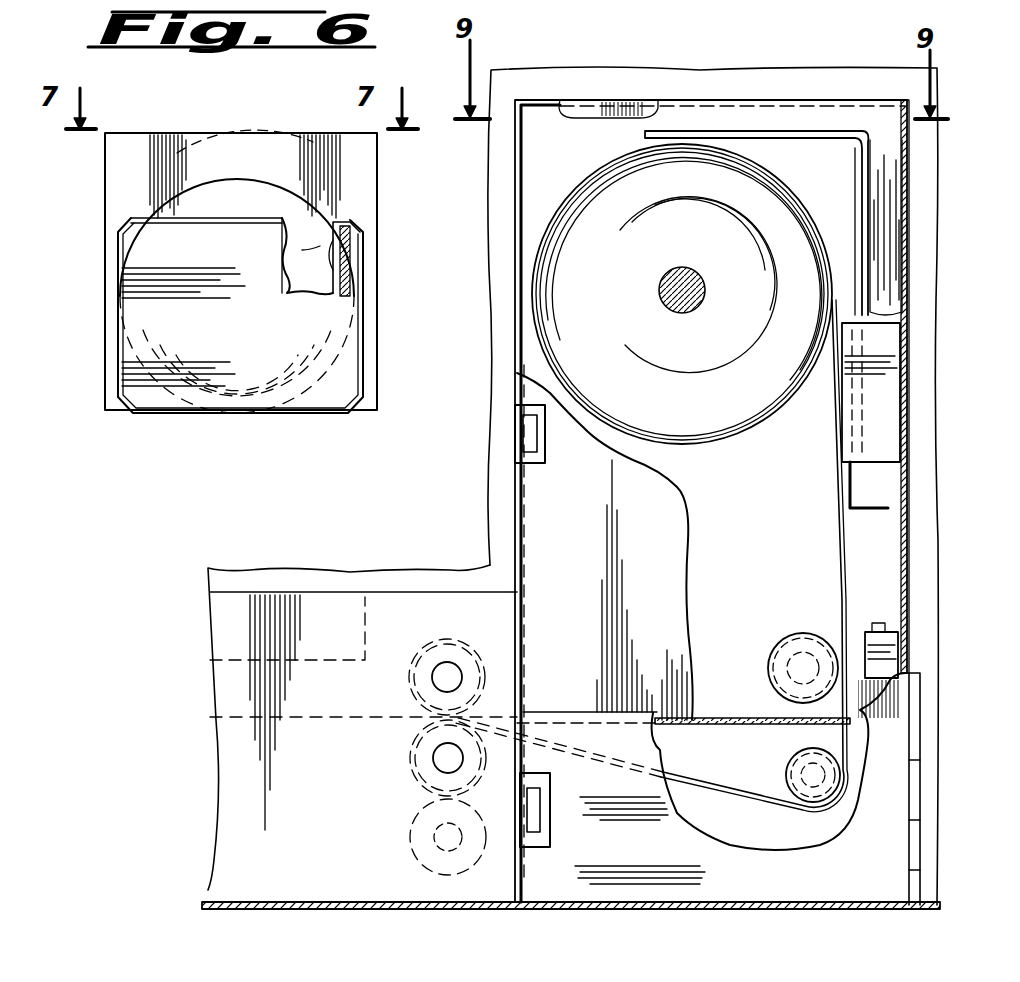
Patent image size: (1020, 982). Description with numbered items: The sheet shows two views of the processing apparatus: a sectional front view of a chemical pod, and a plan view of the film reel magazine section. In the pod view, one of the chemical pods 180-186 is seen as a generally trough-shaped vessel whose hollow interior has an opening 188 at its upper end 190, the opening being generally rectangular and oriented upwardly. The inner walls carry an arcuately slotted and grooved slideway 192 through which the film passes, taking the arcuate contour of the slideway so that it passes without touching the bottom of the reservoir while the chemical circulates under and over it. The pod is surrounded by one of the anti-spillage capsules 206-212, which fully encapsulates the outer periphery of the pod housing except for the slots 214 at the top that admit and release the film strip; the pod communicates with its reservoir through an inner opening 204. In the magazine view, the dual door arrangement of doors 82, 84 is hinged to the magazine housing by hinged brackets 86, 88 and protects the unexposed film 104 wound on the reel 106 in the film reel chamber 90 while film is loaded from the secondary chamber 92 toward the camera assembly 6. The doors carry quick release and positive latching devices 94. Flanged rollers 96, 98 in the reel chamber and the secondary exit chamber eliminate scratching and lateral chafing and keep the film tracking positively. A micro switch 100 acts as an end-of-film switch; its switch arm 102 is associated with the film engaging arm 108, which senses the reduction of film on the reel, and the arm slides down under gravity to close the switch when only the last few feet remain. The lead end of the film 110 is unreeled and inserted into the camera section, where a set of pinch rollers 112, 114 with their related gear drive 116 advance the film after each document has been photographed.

In FIG. 8, the camera assembly 6 is at (208, 792).
In FIG. 8, the door 82 is at (672, 537).
In FIG. 8, the door 84 is at (680, 890).
In FIG. 8, the hinged bracket 86 is at (905, 128).
In FIG. 8, the hinged bracket 88 is at (911, 880).
In FIG. 8, the film reel chamber 90 is at (543, 128).
In FIG. 8, the secondary chamber 92 is at (762, 830).
In FIG. 8, the quick release and positive latching devices 94 is at (523, 442).
In FIG. 8, the flanged roller 96 is at (768, 668).
In FIG. 8, the flanged roller 98 is at (787, 768).
In FIG. 8, the micro switch 100 is at (865, 645).
In FIG. 8, the switch arm 102 is at (856, 495).
In FIG. 6, the film 104 is at (130, 188).
In FIG. 8, the film 104 is at (732, 430).
In FIG. 8, the reel 106 is at (660, 292).
In FIG. 8, the film engaging arm 108 is at (708, 132).
In FIG. 8, the lead end of the film 110 is at (226, 712).
In FIG. 8, the pinch roller 112 is at (447, 650).
In FIG. 8, the pinch roller 114 is at (430, 768).
In FIG. 8, the gear drive 116 is at (428, 838).
In FIG. 6, the opening 188 is at (302, 245).
In FIG. 6, the upper end 190 is at (160, 252).
In FIG. 6, the slideway 192 is at (340, 281).
In FIG. 8, the inner opening 204 is at (372, 965).
In FIG. 6, the slot 214 is at (335, 222).
In FIG. 6, the chemical pods 180-186 is at (184, 402).
In FIG. 8, the chemical pods 180-186 is at (172, 965).
In FIG. 6, the anti-spillage capsules 206-212 is at (222, 216).